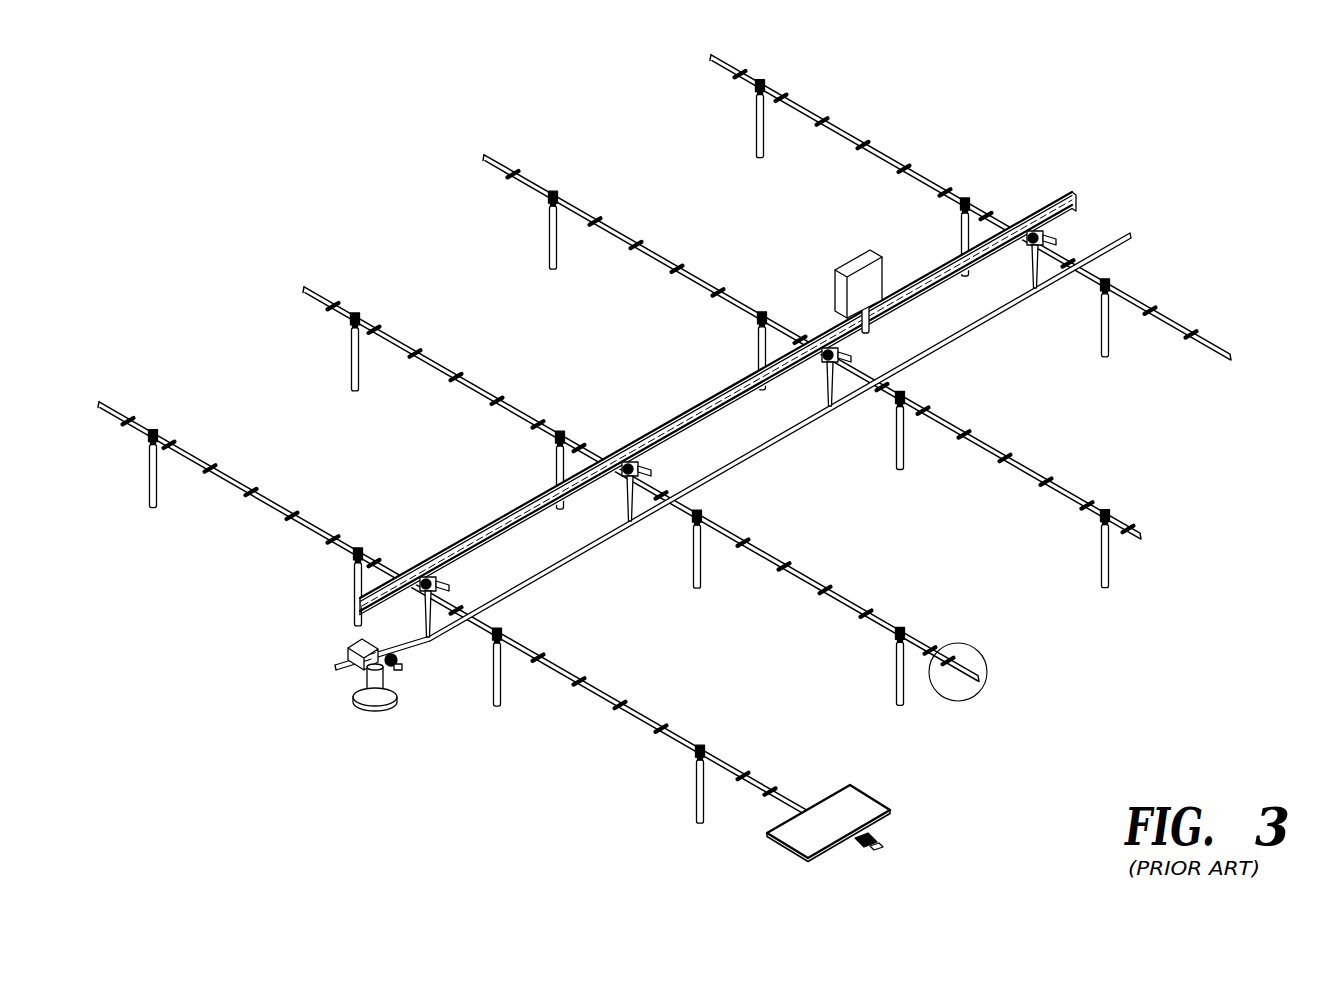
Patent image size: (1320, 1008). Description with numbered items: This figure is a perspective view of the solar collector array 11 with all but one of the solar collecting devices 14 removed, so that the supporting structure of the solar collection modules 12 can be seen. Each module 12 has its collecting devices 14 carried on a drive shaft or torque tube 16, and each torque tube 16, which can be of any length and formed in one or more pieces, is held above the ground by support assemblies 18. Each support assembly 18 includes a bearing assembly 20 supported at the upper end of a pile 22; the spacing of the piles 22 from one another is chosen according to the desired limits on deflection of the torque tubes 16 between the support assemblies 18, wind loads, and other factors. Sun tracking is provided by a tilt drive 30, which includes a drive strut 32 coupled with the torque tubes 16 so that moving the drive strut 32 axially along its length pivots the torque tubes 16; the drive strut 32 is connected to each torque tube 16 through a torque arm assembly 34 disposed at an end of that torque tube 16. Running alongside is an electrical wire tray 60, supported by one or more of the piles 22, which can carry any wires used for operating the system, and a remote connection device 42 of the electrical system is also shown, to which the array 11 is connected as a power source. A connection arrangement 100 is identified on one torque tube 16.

The solar collector array 11 is at (408, 141).
The solar collection module 12 is at (713, 861).
The solar collecting device 14 is at (860, 805).
The torque tube 16 is at (881, 151).
The support assembly 18 is at (711, 119).
The bearing assembly 20 is at (773, 77).
The pile 22 is at (768, 132).
The tilt drive 30 is at (406, 727).
The drive strut 32 is at (569, 576).
The torque arm assembly 34 is at (1015, 274).
The remote connection device 42 is at (826, 247).
The electrical wire tray 60 is at (719, 385).
The connection arrangement 100 is at (971, 645).